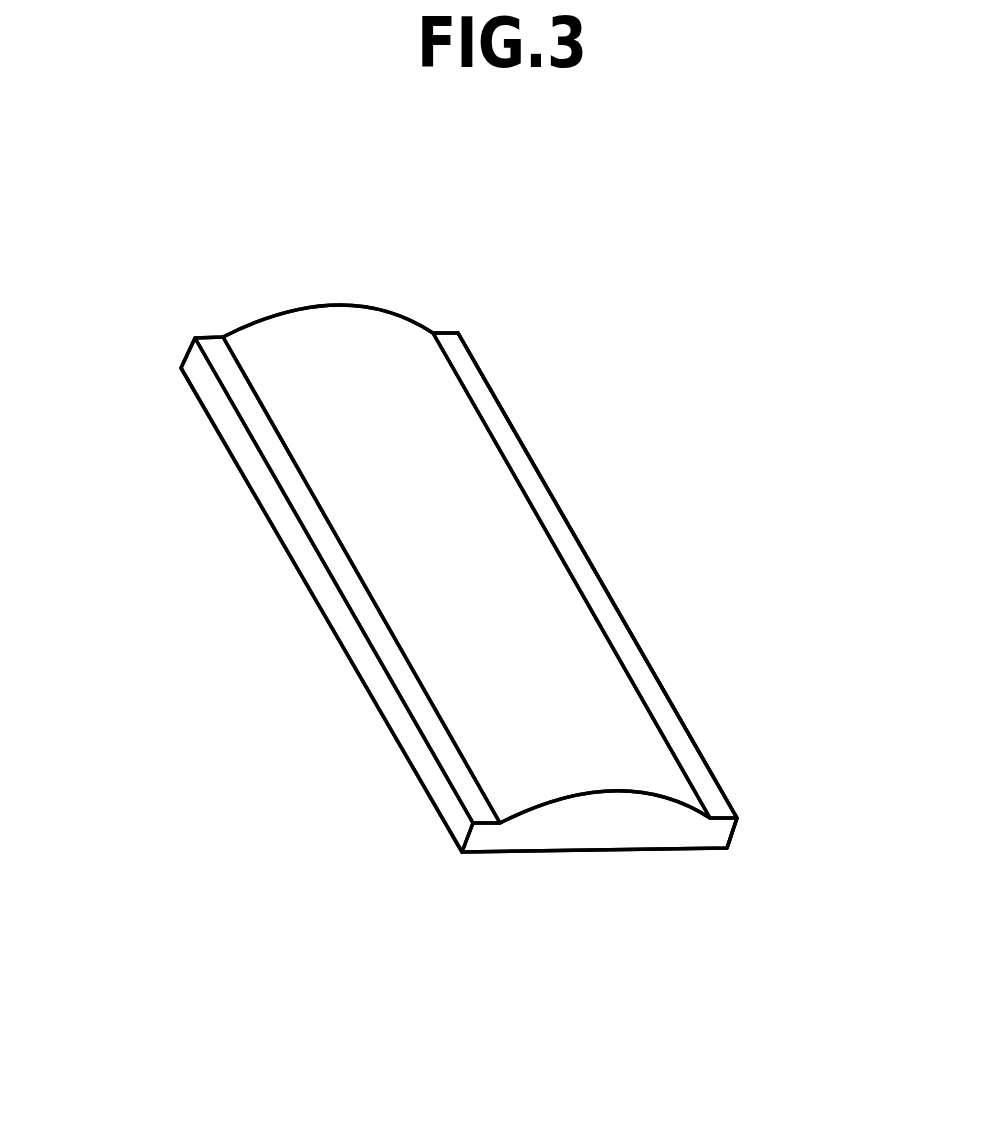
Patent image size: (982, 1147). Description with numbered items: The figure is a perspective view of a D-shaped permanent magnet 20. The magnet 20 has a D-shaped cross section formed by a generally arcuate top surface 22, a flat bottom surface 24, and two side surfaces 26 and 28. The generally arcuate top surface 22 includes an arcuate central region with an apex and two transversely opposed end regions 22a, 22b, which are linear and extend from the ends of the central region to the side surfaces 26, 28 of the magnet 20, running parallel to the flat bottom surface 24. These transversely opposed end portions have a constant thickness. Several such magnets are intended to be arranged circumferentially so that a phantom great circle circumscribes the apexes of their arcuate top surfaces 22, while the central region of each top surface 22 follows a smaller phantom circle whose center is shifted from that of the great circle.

The permanent magnet 20 is at (547, 453).
The generally arcuate top surface 22 is at (520, 603).
The transversely opposed end region 22a is at (288, 497).
The transversely opposed end region 22b is at (672, 700).
The flat bottom surface 24 is at (600, 852).
The side surface 26 is at (382, 692).
The side surface 28 is at (738, 830).